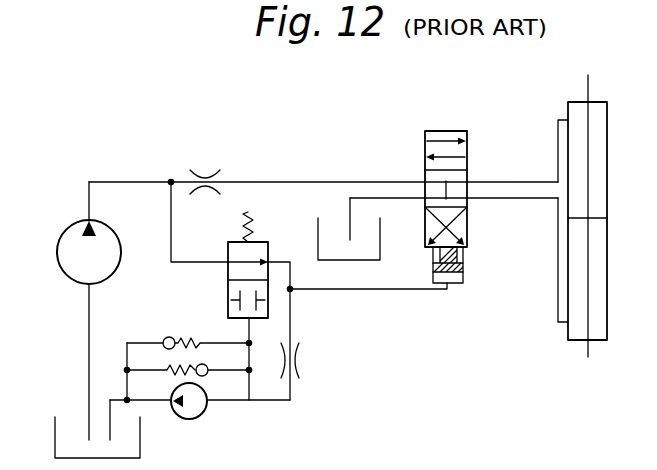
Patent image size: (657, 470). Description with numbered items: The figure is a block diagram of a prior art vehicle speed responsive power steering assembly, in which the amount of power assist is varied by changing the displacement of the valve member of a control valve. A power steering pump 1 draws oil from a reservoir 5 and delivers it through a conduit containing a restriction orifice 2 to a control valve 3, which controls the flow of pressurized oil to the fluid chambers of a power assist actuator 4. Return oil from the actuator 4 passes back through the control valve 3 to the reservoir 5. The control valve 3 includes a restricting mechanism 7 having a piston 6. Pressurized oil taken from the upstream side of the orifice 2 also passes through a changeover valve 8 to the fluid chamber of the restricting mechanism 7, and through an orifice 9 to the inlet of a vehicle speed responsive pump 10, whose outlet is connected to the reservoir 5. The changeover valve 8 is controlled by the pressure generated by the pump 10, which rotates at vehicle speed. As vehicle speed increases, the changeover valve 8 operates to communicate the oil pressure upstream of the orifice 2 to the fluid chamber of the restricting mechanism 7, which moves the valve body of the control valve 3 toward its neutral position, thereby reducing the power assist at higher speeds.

The power steering pump 1 is at (68, 230).
The restriction orifice 2 is at (200, 171).
The control valve 3 is at (425, 131).
The power assist actuator 4 is at (568, 108).
The reservoir 5 is at (55, 436).
The piston 6 is at (466, 257).
The restricting mechanism 7 is at (455, 286).
The changeover valve 8 is at (228, 250).
The orifice 9 is at (298, 353).
The vehicle speed responsive pump 10 is at (193, 420).